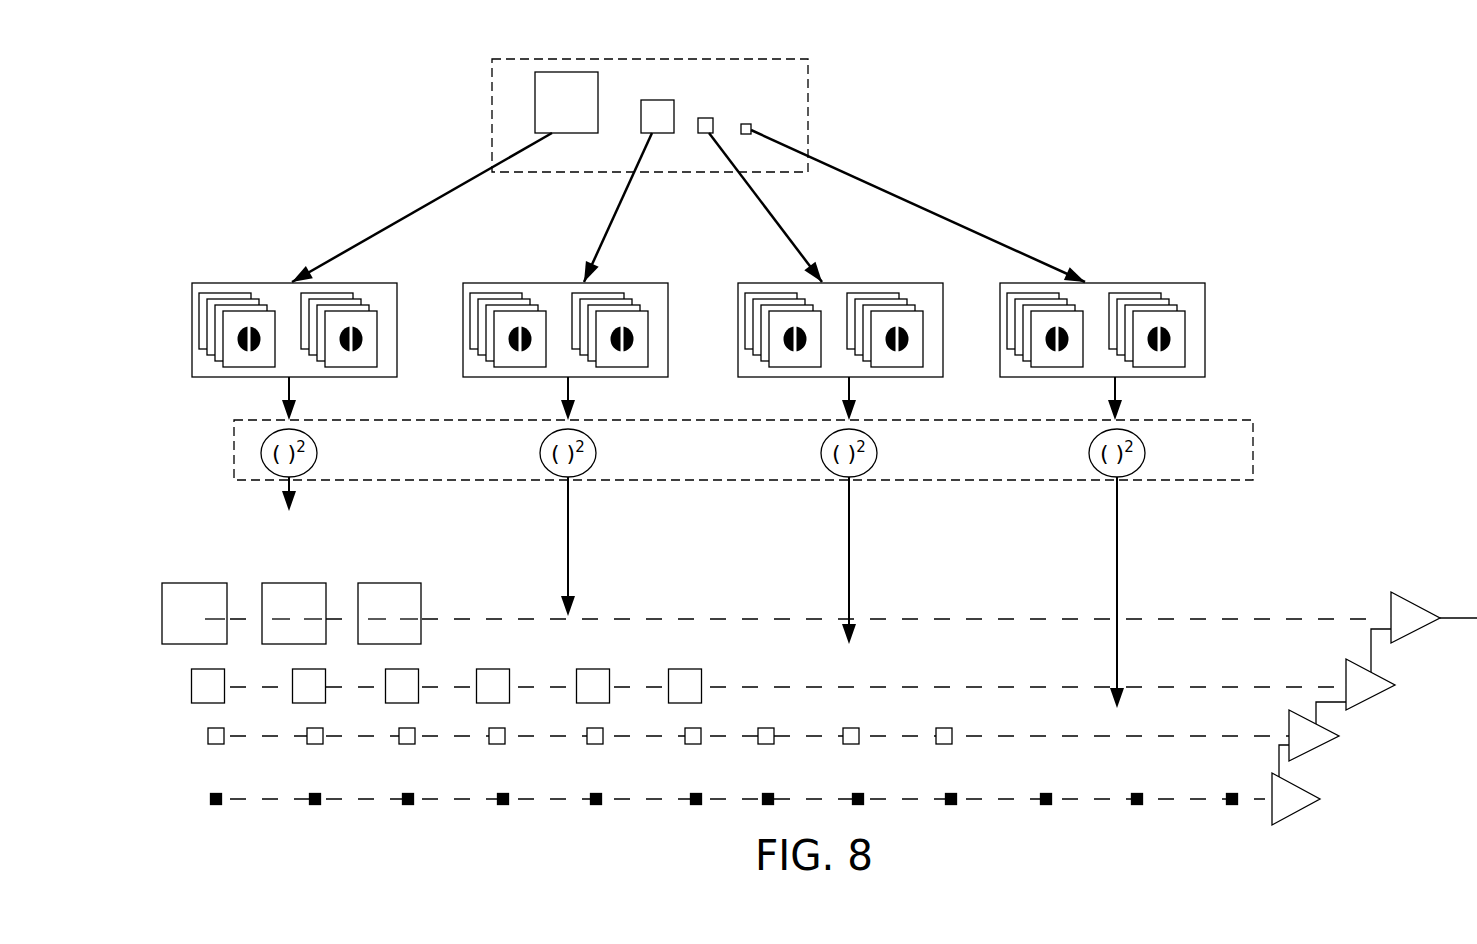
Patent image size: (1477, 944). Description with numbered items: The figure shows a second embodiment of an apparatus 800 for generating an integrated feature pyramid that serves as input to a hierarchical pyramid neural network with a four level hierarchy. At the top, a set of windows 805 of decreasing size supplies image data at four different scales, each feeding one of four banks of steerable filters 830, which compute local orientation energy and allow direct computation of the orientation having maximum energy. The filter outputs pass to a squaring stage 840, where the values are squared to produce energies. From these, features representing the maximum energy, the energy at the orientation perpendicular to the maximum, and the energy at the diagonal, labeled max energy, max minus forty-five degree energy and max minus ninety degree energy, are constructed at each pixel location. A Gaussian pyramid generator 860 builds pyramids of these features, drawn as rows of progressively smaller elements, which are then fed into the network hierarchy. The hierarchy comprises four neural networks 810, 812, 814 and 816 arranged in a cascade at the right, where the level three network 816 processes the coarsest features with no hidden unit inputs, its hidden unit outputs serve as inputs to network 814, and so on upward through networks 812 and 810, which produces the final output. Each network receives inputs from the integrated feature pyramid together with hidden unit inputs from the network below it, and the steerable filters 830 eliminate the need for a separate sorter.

The apparatus for generating an integrated feature pyramid 800 is at (378, 168).
The set of multi-resolution windows 805 is at (512, 102).
The neural network 810 is at (1400, 592).
The neural network 812 is at (1392, 683).
The neural network 814 is at (1329, 745).
The neural network 816 is at (1298, 815).
The steerable filters 830 is at (1205, 328).
The squaring / energy computation stage 840 is at (246, 436).
The Gaussian pyramid generator 860 is at (154, 586).